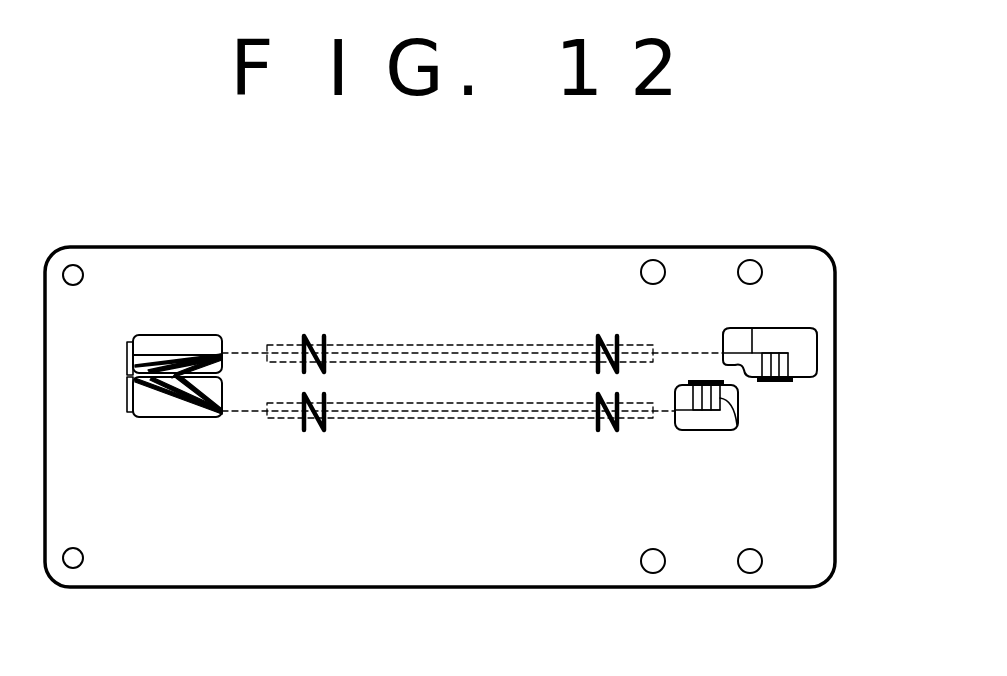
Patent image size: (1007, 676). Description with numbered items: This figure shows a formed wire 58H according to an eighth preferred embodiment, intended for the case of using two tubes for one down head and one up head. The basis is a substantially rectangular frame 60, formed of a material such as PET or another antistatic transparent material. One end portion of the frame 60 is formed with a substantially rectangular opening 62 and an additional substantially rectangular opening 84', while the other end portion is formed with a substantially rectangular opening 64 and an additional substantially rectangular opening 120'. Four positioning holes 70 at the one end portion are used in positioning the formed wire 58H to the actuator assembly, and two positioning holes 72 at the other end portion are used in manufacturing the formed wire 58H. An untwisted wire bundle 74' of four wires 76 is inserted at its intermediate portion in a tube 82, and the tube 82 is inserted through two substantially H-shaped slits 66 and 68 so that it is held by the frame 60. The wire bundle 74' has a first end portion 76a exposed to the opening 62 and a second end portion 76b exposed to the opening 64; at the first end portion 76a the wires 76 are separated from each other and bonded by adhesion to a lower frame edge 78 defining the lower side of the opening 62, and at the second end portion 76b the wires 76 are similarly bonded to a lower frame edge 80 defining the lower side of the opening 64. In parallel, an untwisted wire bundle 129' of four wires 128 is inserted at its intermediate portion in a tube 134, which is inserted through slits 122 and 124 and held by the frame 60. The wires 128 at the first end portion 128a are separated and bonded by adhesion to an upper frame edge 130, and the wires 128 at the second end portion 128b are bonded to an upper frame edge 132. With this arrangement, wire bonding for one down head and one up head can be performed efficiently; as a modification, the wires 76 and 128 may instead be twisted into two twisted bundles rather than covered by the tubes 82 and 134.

The formed wire 58H is at (440, 420).
The frame 60 is at (440, 589).
The opening 62 is at (821, 343).
The opening 64 is at (173, 332).
The H-shaped slit 66 is at (605, 334).
The H-shaped slit 68 is at (312, 334).
The positioning hole 70 is at (653, 260).
The positioning hole 72 is at (73, 265).
The untwisted wire bundle 74' is at (472, 332).
The wire 76 is at (752, 340).
The first end portion 76a is at (790, 362).
The second end portion 76b is at (150, 345).
The lower frame edge 78 is at (790, 382).
The lower frame edge 80 is at (127, 347).
The tube 82 is at (472, 334).
The opening 84' is at (697, 445).
The opening 120' is at (138, 393).
The slit 122 is at (605, 432).
The slit 124 is at (312, 431).
The wire 128 is at (717, 402).
The first end portion 128a is at (737, 430).
The second end portion 128b is at (186, 405).
The untwisted wire bundle 129' is at (448, 444).
The upper frame edge 130 is at (695, 383).
The upper frame edge 132 is at (127, 402).
The tube 134 is at (448, 443).